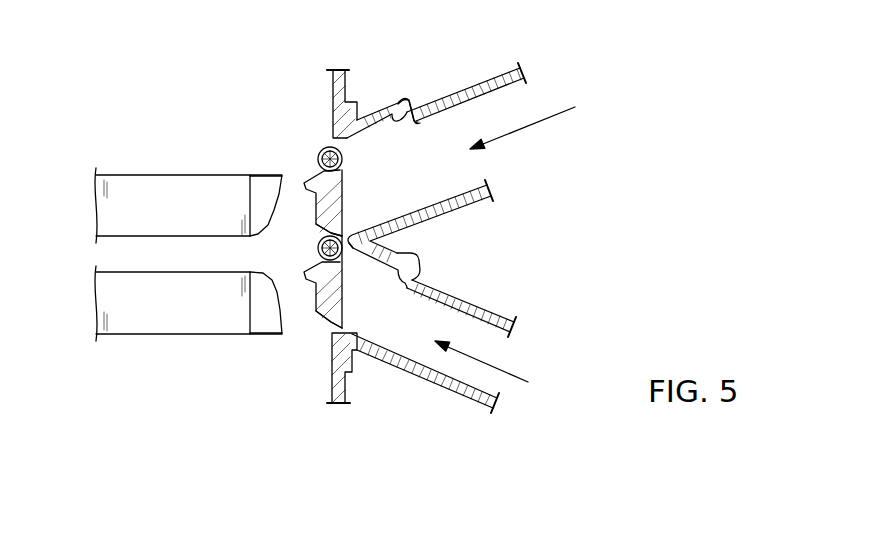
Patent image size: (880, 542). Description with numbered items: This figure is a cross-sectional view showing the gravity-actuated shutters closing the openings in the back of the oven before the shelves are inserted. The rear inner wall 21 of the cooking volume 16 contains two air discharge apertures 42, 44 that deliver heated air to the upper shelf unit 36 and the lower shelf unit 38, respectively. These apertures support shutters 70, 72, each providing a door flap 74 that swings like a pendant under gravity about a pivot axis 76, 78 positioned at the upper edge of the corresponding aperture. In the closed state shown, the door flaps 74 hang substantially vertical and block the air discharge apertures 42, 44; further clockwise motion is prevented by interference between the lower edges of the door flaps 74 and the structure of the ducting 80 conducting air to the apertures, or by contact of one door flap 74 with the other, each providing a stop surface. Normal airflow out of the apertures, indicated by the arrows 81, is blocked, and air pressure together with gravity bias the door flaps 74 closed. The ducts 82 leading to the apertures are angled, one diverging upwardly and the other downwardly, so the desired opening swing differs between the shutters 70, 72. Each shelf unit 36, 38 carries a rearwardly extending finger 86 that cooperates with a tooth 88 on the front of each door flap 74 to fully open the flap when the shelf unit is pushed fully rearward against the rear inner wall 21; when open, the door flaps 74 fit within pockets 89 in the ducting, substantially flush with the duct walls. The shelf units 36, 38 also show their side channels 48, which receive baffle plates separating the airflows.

The cooking volume 16 is at (152, 104).
The rear inner wall 21 is at (330, 96).
The upper shelf unit 36 is at (142, 182).
The lower shelf unit 38 is at (153, 327).
The air discharge aperture 42 is at (310, 139).
The air discharge aperture 44 is at (293, 361).
The side channels 48 is at (193, 227).
The shutter 70 is at (352, 178).
The shutter 72 is at (360, 286).
The door flap 74 is at (347, 207).
The pivot axis 76 is at (378, 112).
The pivot axis 78 is at (372, 243).
The ducting 80 is at (355, 360).
The arrows 81 is at (544, 124).
The ducts 82 is at (500, 73).
The finger 86 is at (267, 185).
The tooth 88 is at (318, 256).
The pockets 89 is at (414, 114).